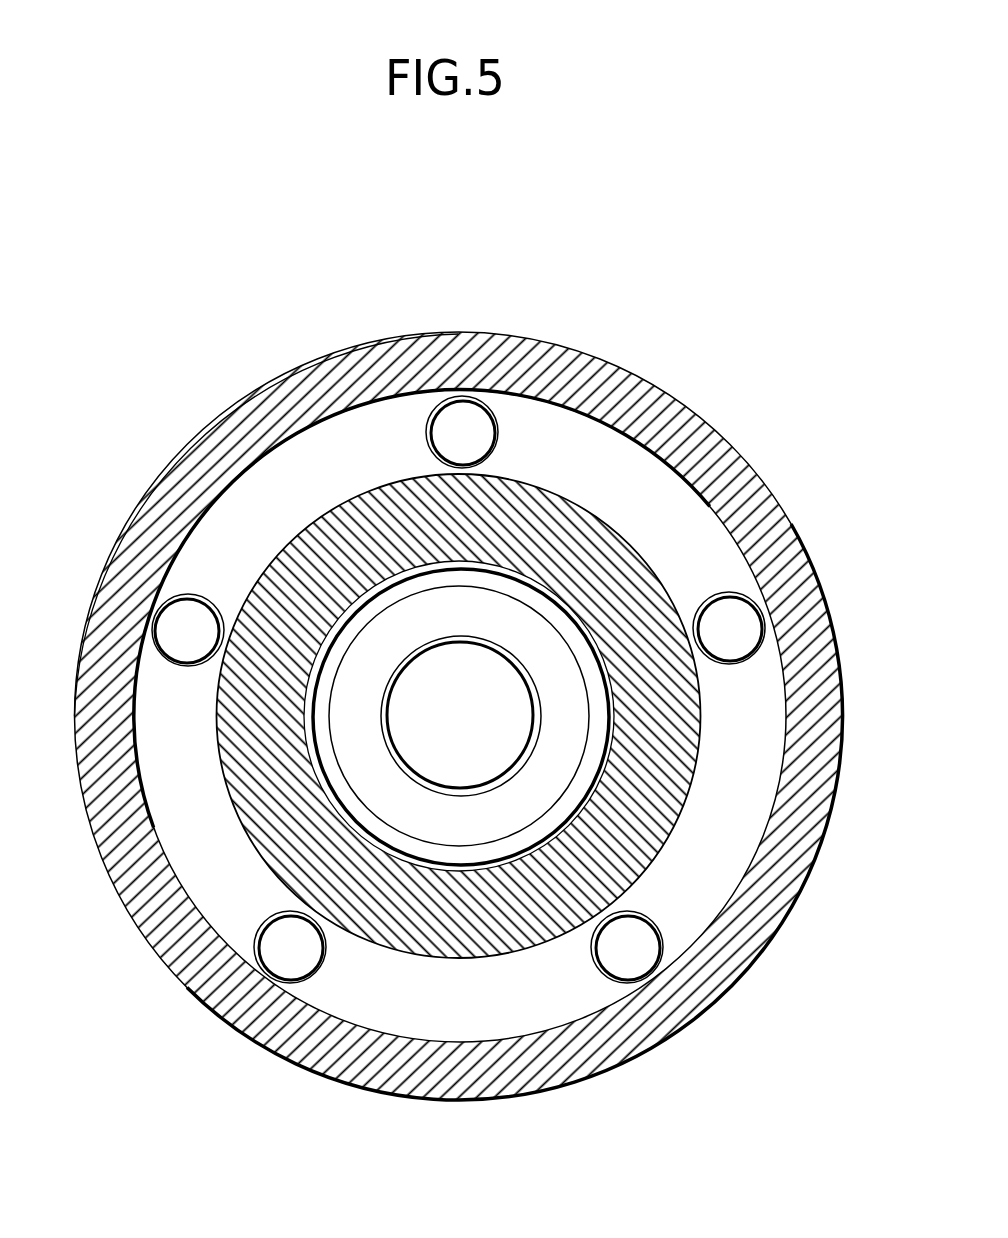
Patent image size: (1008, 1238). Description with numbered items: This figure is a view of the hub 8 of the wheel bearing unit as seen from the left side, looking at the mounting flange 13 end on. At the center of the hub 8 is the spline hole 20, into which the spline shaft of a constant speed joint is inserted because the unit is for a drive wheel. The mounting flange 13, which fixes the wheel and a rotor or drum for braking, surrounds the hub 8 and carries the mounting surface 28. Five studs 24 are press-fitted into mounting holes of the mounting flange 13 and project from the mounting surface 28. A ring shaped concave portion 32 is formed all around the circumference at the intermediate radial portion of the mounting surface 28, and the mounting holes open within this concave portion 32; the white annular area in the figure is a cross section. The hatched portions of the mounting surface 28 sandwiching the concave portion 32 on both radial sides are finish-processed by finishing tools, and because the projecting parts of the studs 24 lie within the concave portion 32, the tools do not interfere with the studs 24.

The hub 8 is at (460, 716).
The mounting flange 13 is at (258, 402).
The spline hole 20 is at (435, 655).
The studs 24 is at (473, 433).
The mounting surface 28 is at (670, 733).
The ring shaped concave portion 32 is at (702, 517).